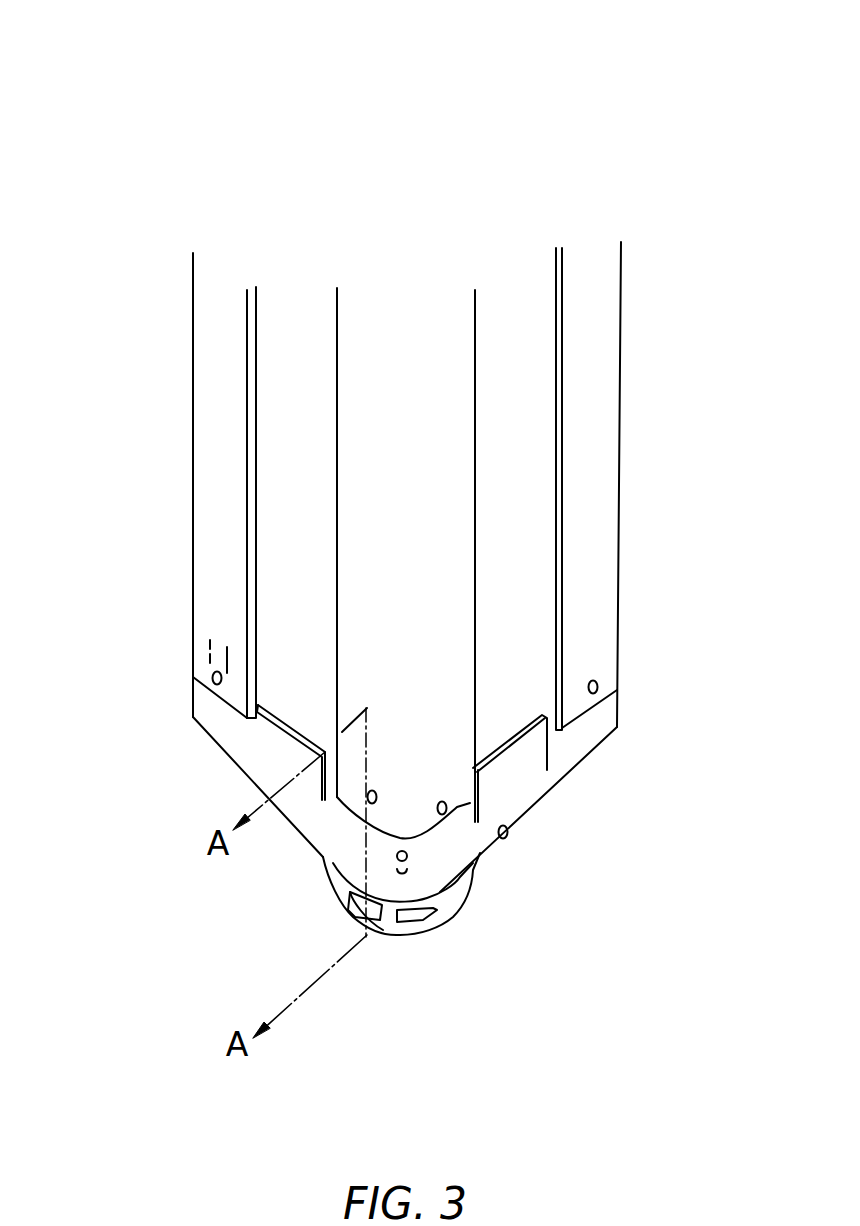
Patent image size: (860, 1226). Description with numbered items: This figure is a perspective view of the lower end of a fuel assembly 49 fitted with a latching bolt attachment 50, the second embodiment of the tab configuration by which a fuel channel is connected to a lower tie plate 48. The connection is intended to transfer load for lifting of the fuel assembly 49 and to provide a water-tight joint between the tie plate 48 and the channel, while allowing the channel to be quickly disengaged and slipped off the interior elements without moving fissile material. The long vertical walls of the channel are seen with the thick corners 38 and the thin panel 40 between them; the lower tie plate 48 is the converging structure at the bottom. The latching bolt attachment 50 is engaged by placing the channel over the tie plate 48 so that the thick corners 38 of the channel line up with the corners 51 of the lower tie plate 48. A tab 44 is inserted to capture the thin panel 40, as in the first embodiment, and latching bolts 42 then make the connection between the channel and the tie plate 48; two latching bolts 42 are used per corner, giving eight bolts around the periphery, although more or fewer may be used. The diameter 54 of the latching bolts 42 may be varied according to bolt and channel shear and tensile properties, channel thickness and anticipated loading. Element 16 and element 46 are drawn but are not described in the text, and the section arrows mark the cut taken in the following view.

The fuel assembly 49 is at (705, 138).
The left side wall 16 is at (203, 425).
The thick corners 38 is at (621, 363).
The thin panel 40 is at (302, 315).
The latching bolts 42 is at (595, 681).
The tab 44 is at (268, 745).
The nozzle 46 is at (443, 922).
The lower tie plate 48 is at (562, 740).
The latching bolt attachment 50 is at (478, 820).
The corners 51 is at (397, 887).
The diameter 54 is at (220, 643).